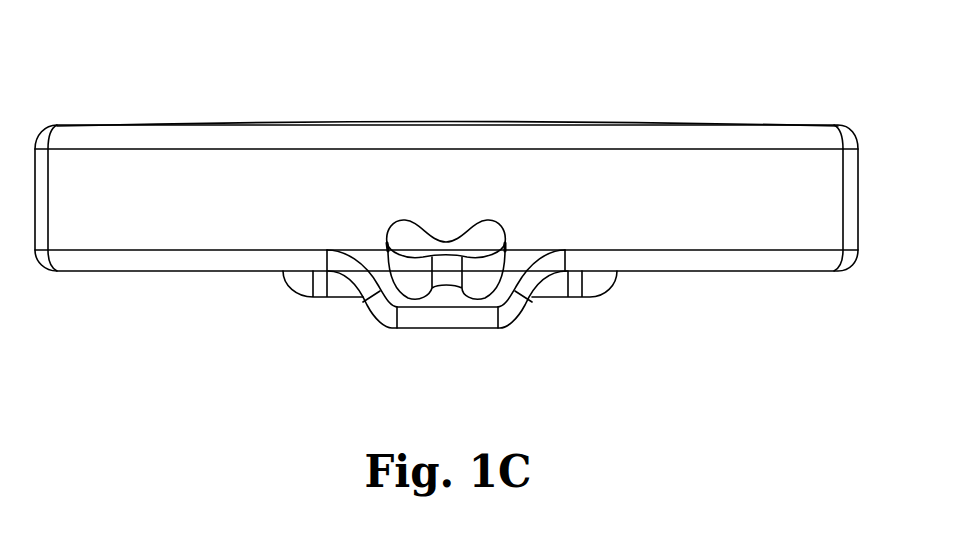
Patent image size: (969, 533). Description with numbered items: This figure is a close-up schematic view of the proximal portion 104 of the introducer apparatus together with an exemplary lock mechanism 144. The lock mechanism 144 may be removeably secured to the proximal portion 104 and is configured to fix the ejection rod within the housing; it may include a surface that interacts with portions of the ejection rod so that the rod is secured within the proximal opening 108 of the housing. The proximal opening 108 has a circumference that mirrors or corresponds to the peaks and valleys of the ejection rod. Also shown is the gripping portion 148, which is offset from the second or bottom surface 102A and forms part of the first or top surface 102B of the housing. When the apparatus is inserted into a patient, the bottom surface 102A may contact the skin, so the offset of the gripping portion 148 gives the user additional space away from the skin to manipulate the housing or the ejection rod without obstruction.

The proximal portion 104 is at (801, 320).
The second (or bottom) surface 102A is at (590, 297).
The first (or top) surface 102B is at (688, 125).
The proximal opening 108 is at (408, 284).
The lock mechanism 144 is at (485, 123).
The gripping portion 148 is at (852, 123).